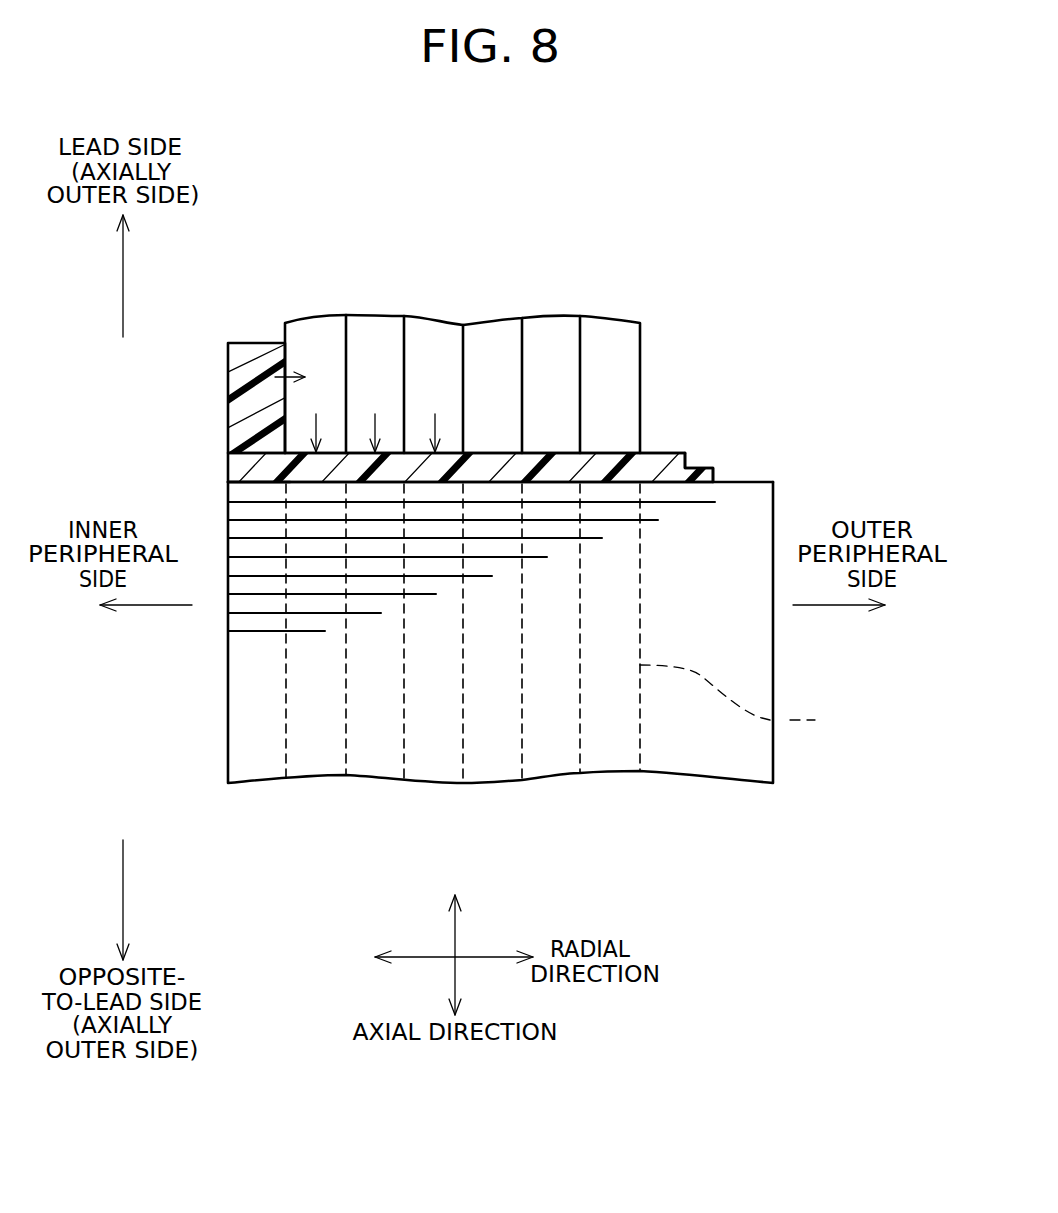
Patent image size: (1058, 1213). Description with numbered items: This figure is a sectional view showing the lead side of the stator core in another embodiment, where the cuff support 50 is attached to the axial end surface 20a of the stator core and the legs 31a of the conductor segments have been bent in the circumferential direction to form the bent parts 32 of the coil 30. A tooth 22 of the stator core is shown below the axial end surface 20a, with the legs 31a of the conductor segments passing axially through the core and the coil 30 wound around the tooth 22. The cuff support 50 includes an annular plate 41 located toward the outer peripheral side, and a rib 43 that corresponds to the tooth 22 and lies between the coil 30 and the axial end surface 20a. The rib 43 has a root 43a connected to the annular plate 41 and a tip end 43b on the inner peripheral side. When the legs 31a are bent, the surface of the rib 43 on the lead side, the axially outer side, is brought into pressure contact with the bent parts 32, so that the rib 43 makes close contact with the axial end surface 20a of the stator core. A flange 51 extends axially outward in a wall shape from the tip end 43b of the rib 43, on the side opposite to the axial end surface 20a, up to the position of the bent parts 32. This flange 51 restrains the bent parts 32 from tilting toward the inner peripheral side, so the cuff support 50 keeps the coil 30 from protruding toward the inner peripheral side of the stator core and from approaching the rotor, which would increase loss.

The axial end surface 20a is at (757, 482).
The tooth 22 is at (247, 706).
The coil 30 is at (663, 288).
The leg 31a is at (754, 701).
The bent part 32 is at (555, 343).
The annular plate 41 is at (700, 468).
The rib 43 is at (598, 468).
The root 43a is at (620, 455).
The tip end 43b is at (290, 458).
The cuff support 50 is at (768, 376).
The flange 51 is at (228, 362).